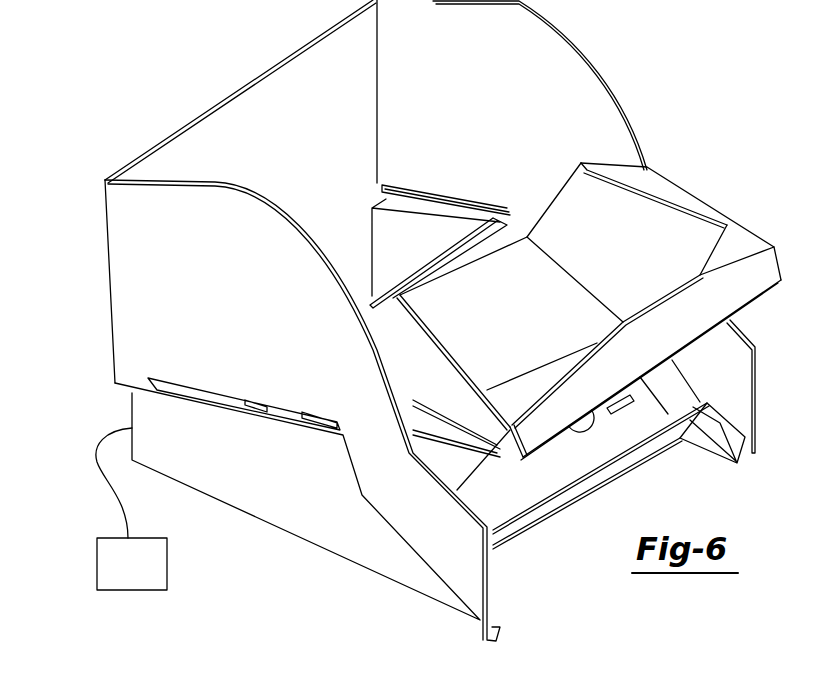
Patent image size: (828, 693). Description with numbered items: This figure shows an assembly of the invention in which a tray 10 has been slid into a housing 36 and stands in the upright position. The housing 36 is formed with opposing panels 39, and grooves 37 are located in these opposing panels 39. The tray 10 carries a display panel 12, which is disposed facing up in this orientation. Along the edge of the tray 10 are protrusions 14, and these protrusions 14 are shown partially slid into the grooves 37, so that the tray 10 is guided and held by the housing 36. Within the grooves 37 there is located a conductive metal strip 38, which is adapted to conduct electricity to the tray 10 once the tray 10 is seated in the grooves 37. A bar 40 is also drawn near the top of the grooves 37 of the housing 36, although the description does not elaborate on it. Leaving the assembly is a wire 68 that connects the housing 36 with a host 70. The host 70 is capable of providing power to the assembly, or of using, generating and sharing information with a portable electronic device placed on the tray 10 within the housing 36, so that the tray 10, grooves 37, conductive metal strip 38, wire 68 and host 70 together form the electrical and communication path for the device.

The tray 10 is at (747, 290).
The display panel 12 is at (665, 237).
The protrusions 14 is at (505, 458).
The housing 36 is at (225, 96).
The grooves 37 is at (467, 192).
The conductive metal strip 38 is at (455, 210).
The opposing panels 39 is at (125, 272).
The bar 40 is at (405, 187).
The wire 68 is at (97, 476).
The host 70 is at (97, 562).